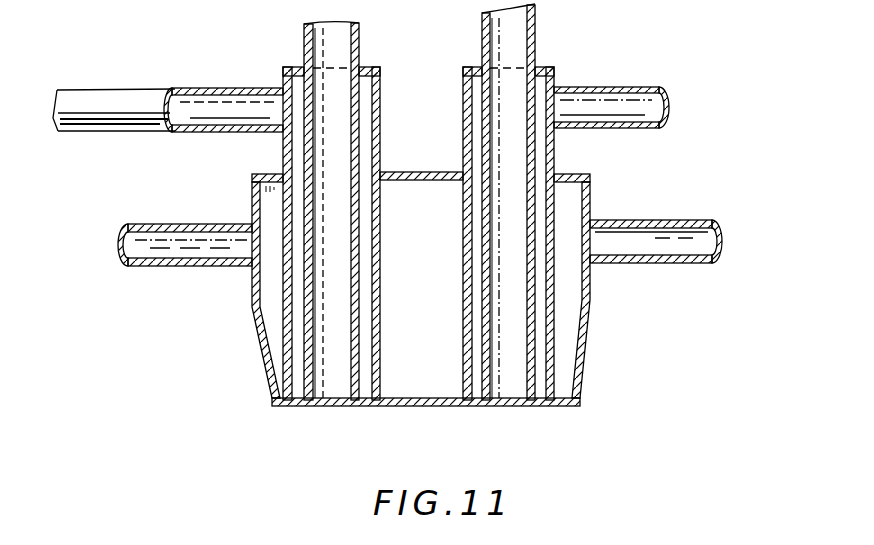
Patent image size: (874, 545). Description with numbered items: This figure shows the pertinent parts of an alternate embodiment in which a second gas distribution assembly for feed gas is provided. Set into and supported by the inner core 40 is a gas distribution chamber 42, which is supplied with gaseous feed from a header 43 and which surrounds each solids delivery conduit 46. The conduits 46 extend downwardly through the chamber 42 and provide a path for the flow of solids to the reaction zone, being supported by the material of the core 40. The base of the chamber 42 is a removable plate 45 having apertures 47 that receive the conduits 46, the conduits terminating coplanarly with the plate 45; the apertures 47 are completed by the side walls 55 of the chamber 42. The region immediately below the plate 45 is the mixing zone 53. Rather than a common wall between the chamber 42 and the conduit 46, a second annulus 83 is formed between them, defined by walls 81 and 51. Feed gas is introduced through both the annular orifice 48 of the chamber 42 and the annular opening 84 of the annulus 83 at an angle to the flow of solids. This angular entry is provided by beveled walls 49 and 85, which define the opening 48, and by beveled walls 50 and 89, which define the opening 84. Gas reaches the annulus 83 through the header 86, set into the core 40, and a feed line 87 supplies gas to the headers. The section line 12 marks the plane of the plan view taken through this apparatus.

The inner core 40 is at (205, 183).
The gas distribution chamber 42 is at (283, 295).
The header 43 is at (655, 220).
The removable plate 45 is at (423, 406).
The conduit 46 is at (348, 291).
The aperture 47 is at (331, 412).
The annular orifice 48 is at (285, 406).
The beveled wall 49 is at (565, 408).
The beveled wall 50 is at (533, 406).
The wall 51 is at (537, 193).
The mixing zone 53 is at (442, 449).
The side wall 55 is at (264, 362).
The wall 81 is at (556, 155).
The second annulus 83 is at (362, 131).
The annular opening 84 is at (300, 408).
The beveled wall 85 is at (583, 368).
The header 86 is at (672, 108).
The feed line 87 is at (124, 96).
The beveled wall 89 is at (543, 408).
The section line 12 is at (122, 470).